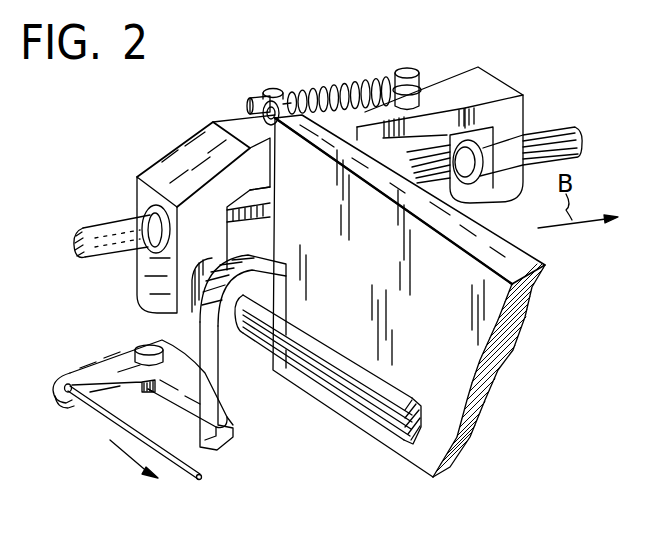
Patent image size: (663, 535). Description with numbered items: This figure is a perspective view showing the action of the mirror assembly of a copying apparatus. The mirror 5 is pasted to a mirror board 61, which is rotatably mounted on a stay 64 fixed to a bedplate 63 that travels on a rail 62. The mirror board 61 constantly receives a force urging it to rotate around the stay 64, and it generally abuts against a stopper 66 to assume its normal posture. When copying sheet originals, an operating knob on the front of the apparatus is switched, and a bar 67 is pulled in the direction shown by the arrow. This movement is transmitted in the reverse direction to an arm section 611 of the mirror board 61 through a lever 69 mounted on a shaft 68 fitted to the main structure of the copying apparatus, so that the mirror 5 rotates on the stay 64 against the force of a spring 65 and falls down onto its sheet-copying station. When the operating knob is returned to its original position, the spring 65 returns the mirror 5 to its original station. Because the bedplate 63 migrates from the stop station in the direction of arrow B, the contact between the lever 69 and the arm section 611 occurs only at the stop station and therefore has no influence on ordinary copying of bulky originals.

The mirror 5 is at (527, 262).
The mirror board 61 is at (460, 383).
The arm section 611 is at (238, 390).
The rail 62 is at (112, 230).
The bedplate 63 is at (460, 77).
The stay 64 is at (362, 403).
The spring 65 is at (345, 81).
The stopper 66 is at (274, 88).
The bar 67 is at (173, 463).
The shaft 68 is at (142, 345).
The lever 69 is at (182, 393).